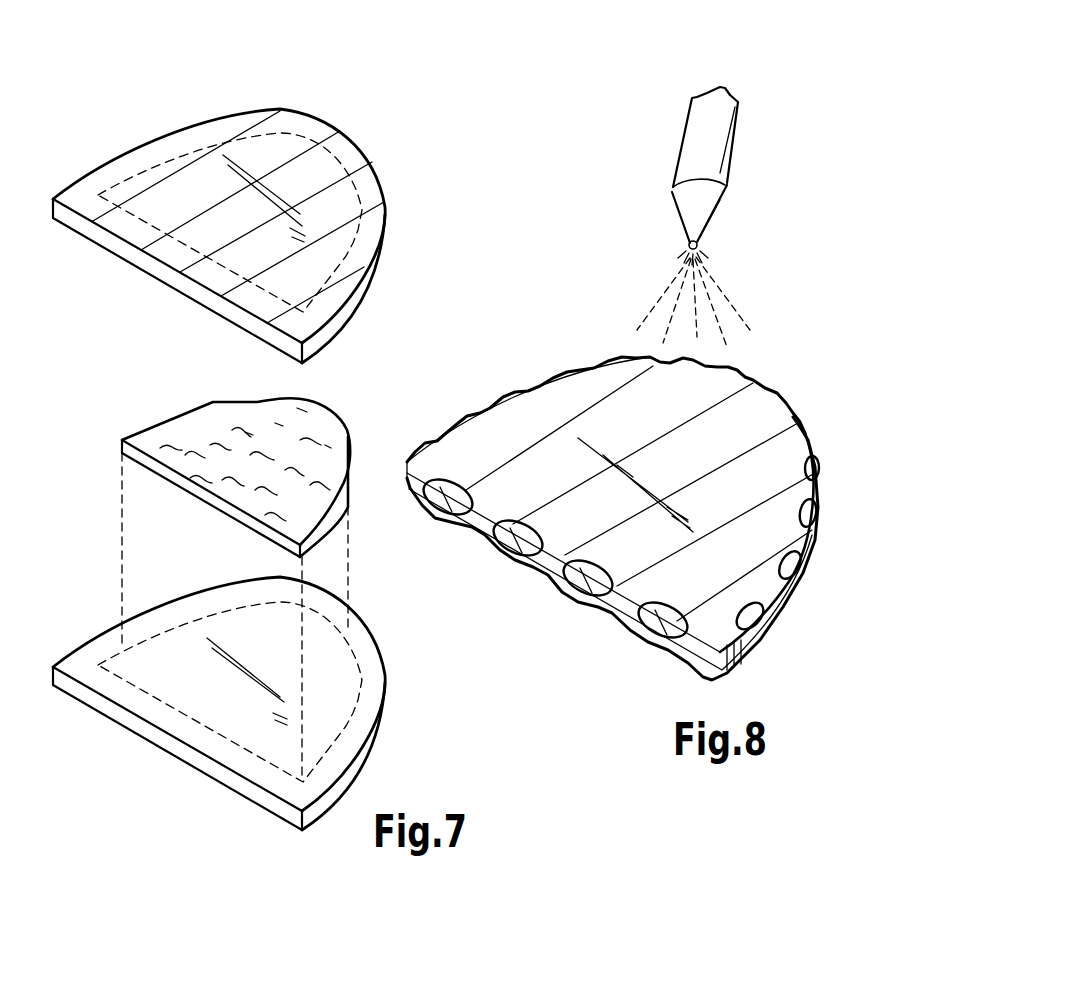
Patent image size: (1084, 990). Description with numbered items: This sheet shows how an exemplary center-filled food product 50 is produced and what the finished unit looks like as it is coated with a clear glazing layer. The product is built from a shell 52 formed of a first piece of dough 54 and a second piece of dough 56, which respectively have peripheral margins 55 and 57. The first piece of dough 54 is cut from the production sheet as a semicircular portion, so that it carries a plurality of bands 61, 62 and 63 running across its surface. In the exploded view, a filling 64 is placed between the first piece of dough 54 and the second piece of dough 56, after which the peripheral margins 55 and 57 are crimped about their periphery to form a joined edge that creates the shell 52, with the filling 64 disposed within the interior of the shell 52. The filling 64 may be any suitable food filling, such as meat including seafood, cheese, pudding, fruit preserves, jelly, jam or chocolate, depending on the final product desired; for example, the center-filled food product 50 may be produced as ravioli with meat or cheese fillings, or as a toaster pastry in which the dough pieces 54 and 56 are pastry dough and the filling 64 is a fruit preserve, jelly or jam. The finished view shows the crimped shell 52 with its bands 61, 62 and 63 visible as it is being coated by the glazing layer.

In FIG. 8, the center-filled food product 50 is at (583, 240).
In FIG. 8, the shell 52 is at (472, 410).
In FIG. 7, the first piece of dough 54 is at (345, 257).
In FIG. 8, the first piece of dough 54 is at (483, 522).
In FIG. 7, the peripheral margin 55 is at (97, 163).
In FIG. 7, the second piece of dough 56 is at (345, 723).
In FIG. 8, the second piece of dough 56 is at (560, 588).
In FIG. 7, the peripheral margin 57 is at (335, 760).
In FIG. 7, the band 61 is at (125, 158).
In FIG. 8, the band 61 is at (418, 447).
In FIG. 7, the band 62 is at (193, 145).
In FIG. 8, the band 62 is at (603, 377).
In FIG. 7, the band 63 is at (285, 122).
In FIG. 8, the band 63 is at (693, 383).
In FIG. 7, the filling 64 is at (245, 428).